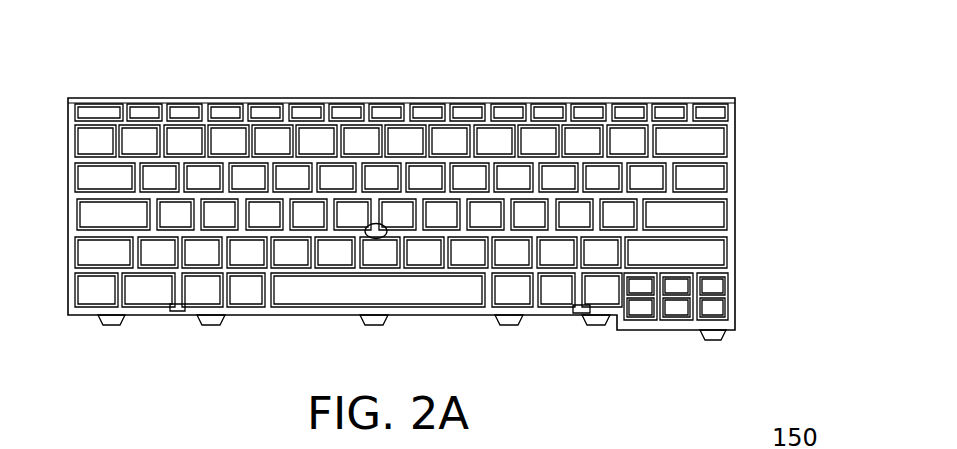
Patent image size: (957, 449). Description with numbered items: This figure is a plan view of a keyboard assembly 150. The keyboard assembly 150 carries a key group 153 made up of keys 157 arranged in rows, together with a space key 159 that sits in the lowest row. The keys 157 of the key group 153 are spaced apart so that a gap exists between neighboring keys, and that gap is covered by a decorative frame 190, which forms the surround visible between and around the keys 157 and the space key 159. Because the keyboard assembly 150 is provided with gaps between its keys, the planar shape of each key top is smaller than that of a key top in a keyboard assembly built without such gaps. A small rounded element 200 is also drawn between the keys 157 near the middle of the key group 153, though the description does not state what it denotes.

The keyboard assembly 150 is at (735, 97).
The key group 153 is at (360, 82).
The keys 157 is at (380, 298).
The space key 159 is at (448, 288).
The decorative frame 190 is at (80, 312).
The pointing stick cap 200 is at (374, 240).